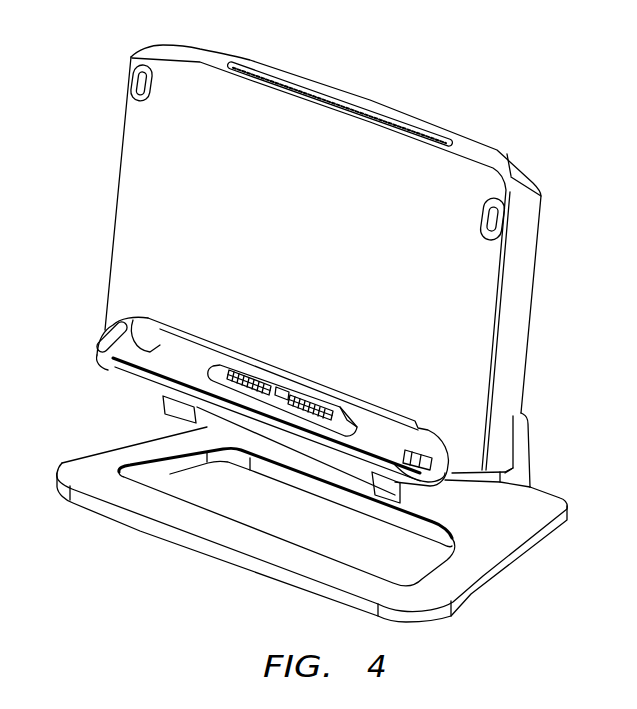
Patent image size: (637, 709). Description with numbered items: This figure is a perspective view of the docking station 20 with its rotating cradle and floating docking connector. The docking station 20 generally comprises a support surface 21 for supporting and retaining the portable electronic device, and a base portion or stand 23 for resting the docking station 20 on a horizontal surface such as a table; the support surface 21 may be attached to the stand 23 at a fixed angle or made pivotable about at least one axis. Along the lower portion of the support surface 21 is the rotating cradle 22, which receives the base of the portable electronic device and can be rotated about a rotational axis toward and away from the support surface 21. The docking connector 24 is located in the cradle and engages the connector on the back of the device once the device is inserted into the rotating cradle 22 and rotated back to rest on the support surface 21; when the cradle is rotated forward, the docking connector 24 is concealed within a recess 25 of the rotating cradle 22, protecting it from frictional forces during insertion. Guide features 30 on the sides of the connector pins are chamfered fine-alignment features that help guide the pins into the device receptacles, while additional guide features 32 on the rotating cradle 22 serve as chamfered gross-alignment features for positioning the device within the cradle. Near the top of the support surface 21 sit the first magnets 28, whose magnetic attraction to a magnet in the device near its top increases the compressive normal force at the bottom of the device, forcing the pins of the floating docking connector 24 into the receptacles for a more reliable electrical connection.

The docking station 20 is at (442, 80).
The support surface 21 is at (297, 250).
The rotating cradle 22 is at (111, 375).
The stand 23 is at (532, 450).
The docking connector 24 is at (239, 386).
The recess 25 is at (282, 384).
The first magnet 28 is at (154, 87).
The guide features 30 is at (222, 366).
The additional guide features 32 is at (128, 346).